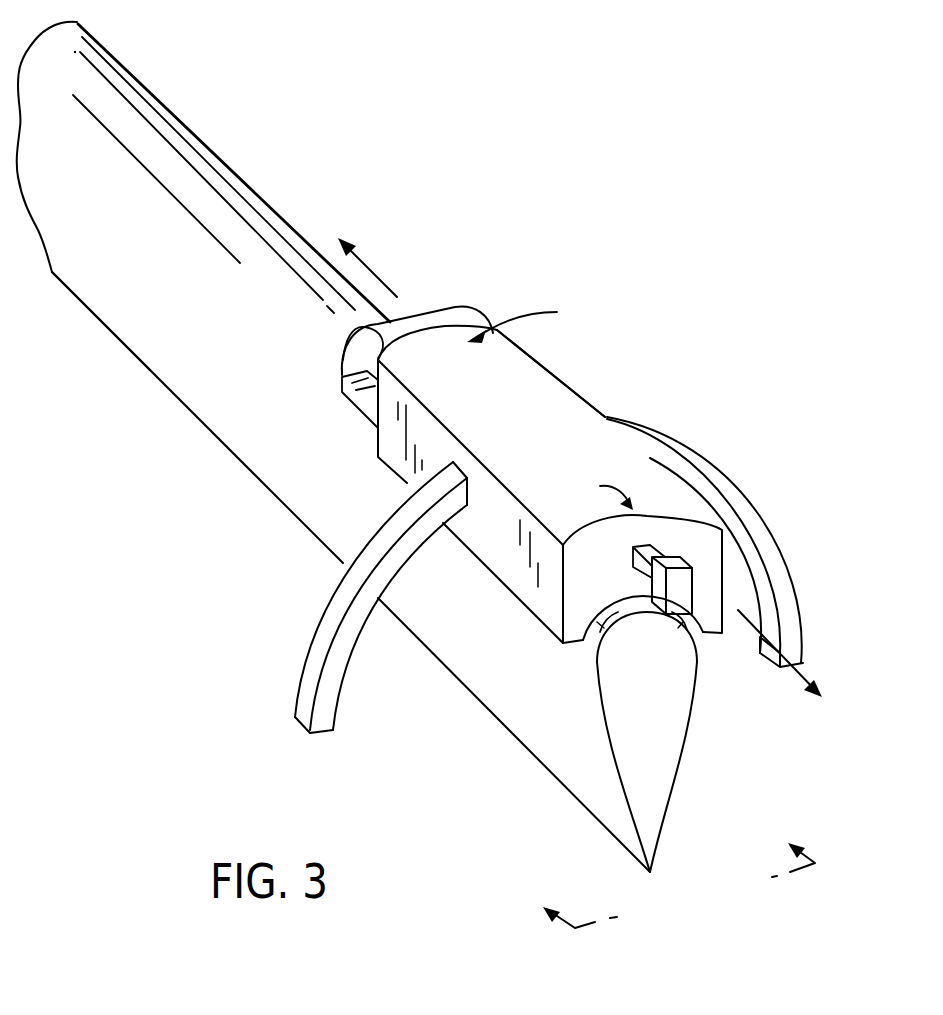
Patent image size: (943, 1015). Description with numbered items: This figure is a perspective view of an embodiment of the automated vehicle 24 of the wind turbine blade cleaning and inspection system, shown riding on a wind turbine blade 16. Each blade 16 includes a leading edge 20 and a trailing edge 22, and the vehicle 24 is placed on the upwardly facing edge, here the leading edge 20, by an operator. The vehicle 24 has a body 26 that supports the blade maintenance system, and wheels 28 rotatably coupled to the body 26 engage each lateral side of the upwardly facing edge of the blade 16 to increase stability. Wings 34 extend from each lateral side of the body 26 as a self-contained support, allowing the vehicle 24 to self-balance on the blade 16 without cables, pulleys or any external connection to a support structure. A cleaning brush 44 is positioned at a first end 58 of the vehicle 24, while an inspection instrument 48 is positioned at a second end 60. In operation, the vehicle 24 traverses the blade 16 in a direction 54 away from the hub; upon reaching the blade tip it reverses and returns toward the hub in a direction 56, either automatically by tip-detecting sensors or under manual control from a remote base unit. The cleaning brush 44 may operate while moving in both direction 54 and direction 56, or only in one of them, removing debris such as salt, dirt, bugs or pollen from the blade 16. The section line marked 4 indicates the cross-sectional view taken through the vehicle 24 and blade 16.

The blade 16 is at (192, 157).
The leading edge 20 is at (283, 218).
The trailing edge 22 is at (138, 356).
The automated vehicle 24 is at (603, 380).
The body 26 is at (630, 460).
The wheels 28 is at (592, 622).
The wings 34 is at (320, 617).
The cleaning brush 44 is at (450, 308).
The inspection instrument 48 is at (673, 588).
The direction 54 is at (376, 268).
The direction 56 is at (765, 636).
The first end 58 is at (529, 319).
The second end 60 is at (593, 492).
The section line 4- 4 is at (682, 905).